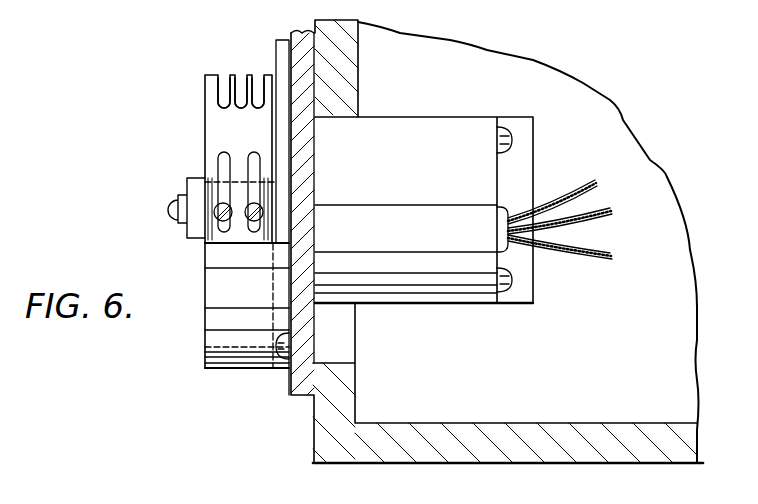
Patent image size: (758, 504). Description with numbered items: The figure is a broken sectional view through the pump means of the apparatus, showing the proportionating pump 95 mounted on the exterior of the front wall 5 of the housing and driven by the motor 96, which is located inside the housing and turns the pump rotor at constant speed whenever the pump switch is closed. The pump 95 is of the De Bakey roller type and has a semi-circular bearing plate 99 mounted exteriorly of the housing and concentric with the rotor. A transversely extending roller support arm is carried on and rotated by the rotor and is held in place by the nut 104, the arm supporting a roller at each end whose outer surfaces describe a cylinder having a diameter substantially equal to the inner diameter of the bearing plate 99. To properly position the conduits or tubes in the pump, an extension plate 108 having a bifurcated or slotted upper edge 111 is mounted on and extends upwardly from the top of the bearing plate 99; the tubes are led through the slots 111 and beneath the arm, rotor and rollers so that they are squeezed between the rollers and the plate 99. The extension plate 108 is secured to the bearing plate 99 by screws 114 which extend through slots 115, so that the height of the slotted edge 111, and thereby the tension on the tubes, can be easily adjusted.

The front wall 5 is at (342, 403).
The proportionating pump 95 is at (232, 371).
The motor 96 is at (463, 210).
The bearing plate 99 is at (205, 358).
The nut 104 is at (170, 213).
The extension plate 108 is at (218, 135).
The slotted upper edge 111 is at (257, 88).
The screws 114 is at (216, 217).
The slots 115 is at (228, 165).